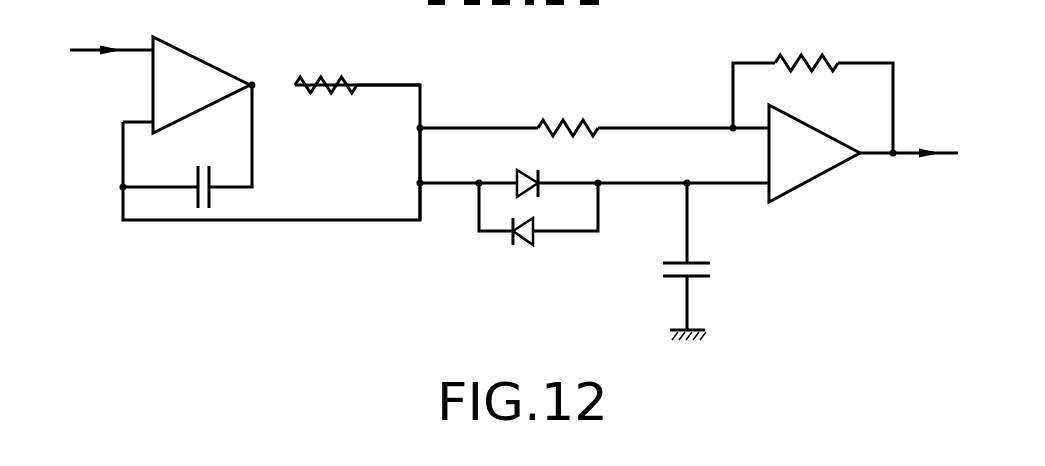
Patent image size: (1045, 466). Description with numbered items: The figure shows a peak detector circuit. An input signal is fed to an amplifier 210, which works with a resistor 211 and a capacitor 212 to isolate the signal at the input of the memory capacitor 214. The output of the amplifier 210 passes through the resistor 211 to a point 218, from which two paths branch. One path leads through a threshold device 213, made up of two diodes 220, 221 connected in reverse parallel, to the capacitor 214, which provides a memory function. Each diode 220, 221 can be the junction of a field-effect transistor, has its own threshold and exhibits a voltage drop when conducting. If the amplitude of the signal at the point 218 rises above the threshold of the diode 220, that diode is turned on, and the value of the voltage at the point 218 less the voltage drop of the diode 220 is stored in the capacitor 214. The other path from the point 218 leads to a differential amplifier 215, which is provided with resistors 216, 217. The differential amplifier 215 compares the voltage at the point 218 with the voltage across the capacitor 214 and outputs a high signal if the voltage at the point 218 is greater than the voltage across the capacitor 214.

The amplifier 210 is at (197, 62).
The resistor 211 is at (325, 70).
The capacitor 212 is at (211, 190).
The threshold device 213 is at (495, 246).
The capacitor 214 is at (700, 262).
The differential amplifier 215 is at (803, 186).
The resistor 216 is at (555, 118).
The resistor 217 is at (795, 53).
The point 218 is at (424, 190).
The diode 220 is at (540, 178).
The diode 221 is at (525, 245).